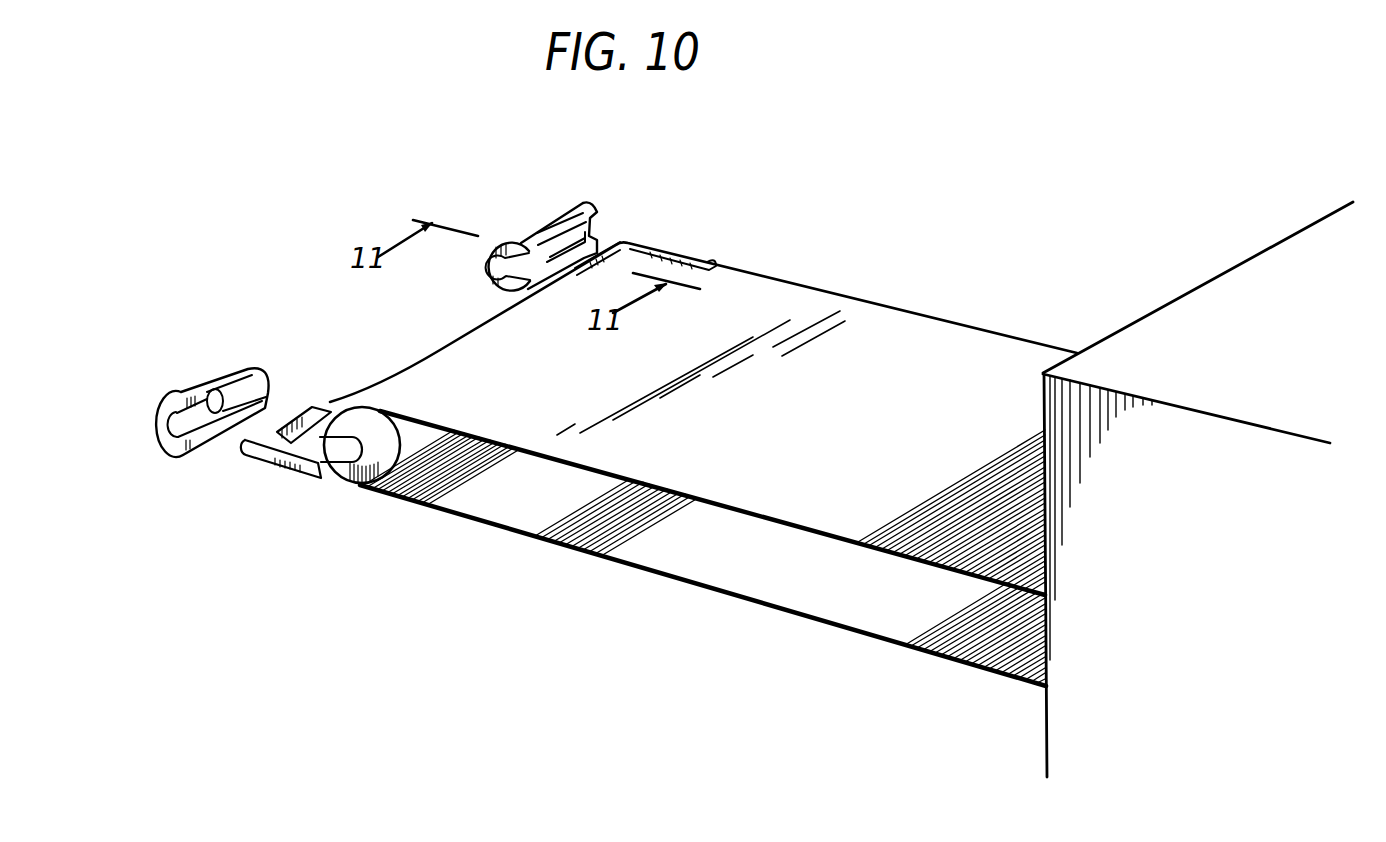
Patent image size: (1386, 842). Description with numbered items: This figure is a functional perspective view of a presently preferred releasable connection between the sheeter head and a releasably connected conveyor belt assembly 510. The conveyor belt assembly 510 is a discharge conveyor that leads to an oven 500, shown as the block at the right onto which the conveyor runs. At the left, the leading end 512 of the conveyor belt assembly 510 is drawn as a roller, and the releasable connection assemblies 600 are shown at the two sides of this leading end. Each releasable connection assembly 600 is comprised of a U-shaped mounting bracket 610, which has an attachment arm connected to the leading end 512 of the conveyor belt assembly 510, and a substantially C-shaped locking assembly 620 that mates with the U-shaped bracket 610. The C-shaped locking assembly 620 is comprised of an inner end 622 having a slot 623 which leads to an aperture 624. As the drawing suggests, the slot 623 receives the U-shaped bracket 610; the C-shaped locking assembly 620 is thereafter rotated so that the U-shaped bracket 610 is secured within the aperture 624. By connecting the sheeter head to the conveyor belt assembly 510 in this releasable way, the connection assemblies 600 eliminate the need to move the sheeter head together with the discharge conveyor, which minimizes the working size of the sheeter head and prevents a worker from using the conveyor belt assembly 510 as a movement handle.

The oven 500 is at (1188, 303).
The conveyor belt assembly 510 is at (950, 346).
The leading end 512 is at (360, 487).
The releasable connection assembly 600 is at (411, 326).
The U-shaped mounting bracket 610 is at (300, 413).
The C-shaped locking assembly 620 is at (183, 396).
The inner end 622 is at (267, 378).
The slot 623 is at (247, 413).
The aperture 624 is at (205, 413).